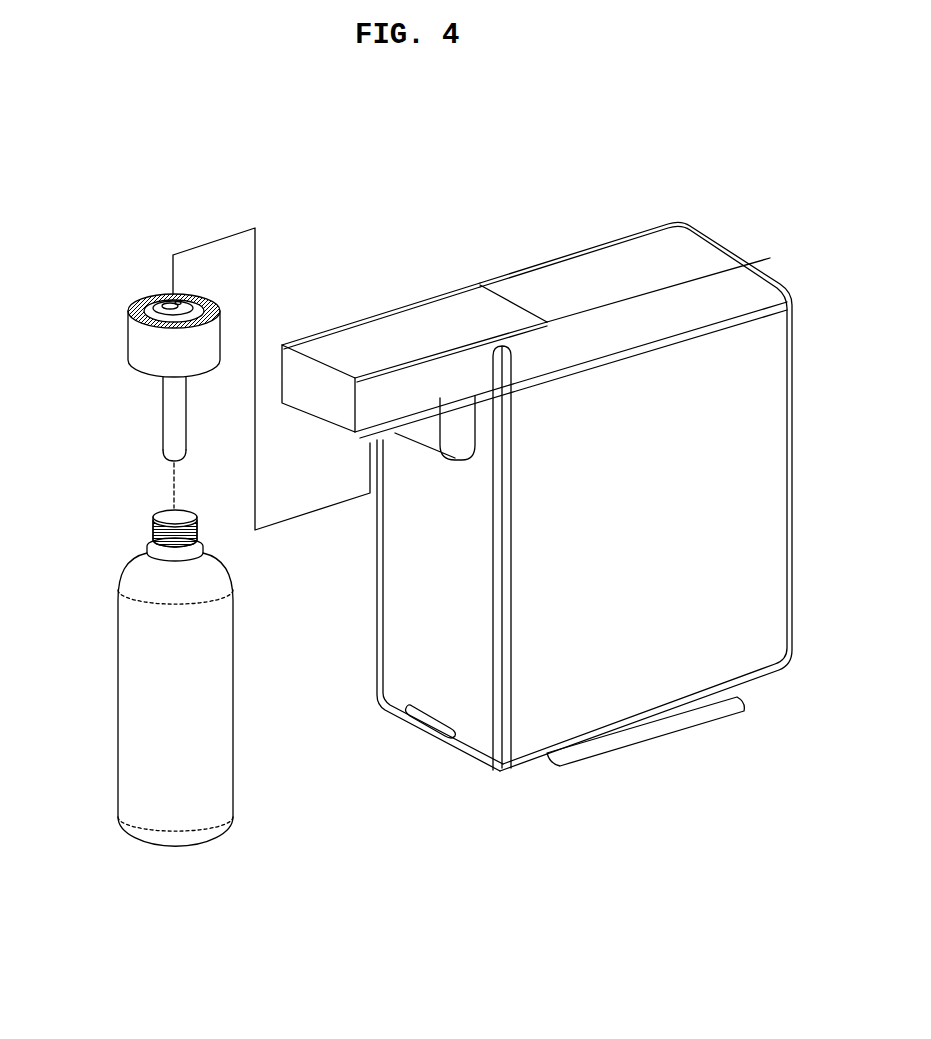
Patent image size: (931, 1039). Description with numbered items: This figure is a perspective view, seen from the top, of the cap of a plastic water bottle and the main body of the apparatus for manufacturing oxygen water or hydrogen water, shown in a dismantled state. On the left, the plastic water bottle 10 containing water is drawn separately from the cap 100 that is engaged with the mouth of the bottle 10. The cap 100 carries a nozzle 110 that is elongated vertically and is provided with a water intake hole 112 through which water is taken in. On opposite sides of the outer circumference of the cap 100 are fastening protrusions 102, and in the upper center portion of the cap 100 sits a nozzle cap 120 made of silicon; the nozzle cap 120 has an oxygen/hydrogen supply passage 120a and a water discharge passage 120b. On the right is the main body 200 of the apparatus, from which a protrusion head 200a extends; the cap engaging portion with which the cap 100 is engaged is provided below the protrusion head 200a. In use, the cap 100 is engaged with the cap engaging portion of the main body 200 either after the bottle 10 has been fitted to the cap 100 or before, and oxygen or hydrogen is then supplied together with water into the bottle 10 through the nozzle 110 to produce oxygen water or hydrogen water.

The plastic water bottle 10 is at (130, 638).
The cap 100 is at (137, 350).
The fastening protrusions 102 is at (128, 309).
The nozzle 110 is at (163, 405).
The water intake hole 112 is at (172, 437).
The nozzle cap 120 is at (167, 298).
The oxygen/hydrogen supply passage 120a is at (170, 305).
The water discharge passage 120b is at (178, 302).
The main body 200 is at (573, 240).
The protrusion head 200a is at (308, 380).